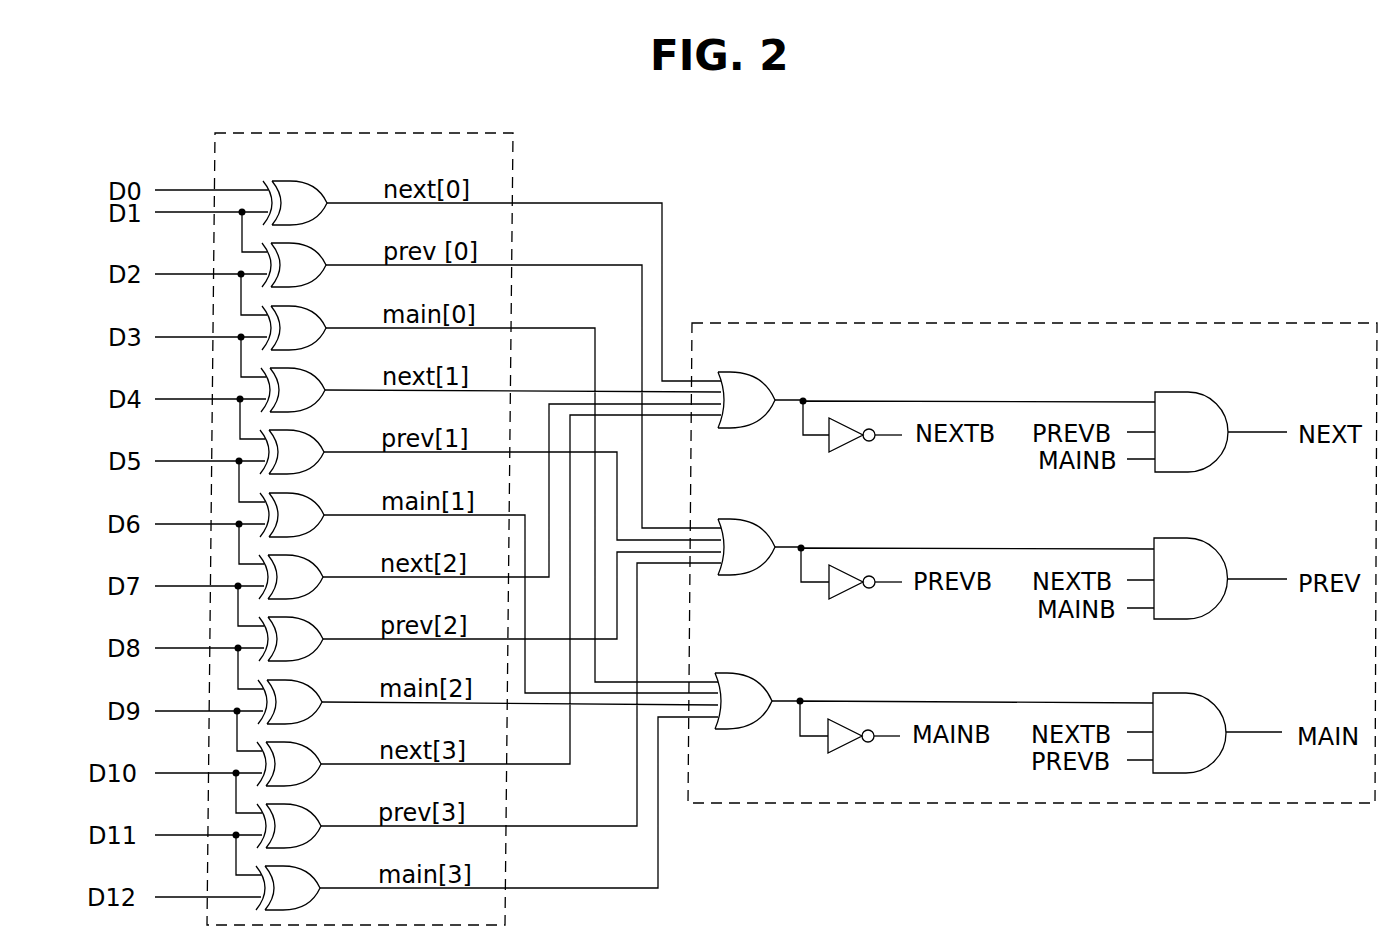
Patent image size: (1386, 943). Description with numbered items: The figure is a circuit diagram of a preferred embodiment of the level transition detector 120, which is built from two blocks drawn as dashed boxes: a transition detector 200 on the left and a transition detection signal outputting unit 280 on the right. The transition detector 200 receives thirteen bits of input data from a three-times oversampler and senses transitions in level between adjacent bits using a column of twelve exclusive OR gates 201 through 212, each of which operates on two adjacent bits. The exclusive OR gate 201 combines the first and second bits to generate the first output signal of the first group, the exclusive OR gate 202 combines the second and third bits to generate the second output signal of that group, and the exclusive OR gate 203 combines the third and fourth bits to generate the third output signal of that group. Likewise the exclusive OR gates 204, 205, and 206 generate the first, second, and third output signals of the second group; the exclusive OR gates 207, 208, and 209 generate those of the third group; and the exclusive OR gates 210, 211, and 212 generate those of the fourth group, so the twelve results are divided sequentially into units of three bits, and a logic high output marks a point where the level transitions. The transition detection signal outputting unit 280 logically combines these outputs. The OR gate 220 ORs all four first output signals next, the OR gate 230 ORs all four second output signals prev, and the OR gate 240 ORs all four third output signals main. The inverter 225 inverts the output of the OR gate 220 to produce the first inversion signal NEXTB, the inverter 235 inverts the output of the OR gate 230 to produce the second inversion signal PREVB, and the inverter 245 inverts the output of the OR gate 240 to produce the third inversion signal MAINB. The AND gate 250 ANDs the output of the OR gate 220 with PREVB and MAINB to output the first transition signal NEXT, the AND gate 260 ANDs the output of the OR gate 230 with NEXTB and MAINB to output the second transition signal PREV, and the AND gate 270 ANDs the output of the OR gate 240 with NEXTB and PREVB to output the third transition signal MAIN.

The level transition detector 120 is at (1148, 200).
The transition detector 200 is at (513, 163).
The exclusive OR gate 201 is at (307, 181).
The exclusive OR gate 202 is at (309, 246).
The exclusive OR gate 203 is at (309, 309).
The exclusive OR gate 204 is at (308, 371).
The exclusive OR gate 205 is at (307, 433).
The exclusive OR gate 206 is at (307, 496).
The exclusive OR gate 207 is at (306, 558).
The exclusive OR gate 208 is at (306, 620).
The exclusive OR gate 209 is at (305, 683).
The exclusive OR gate 210 is at (304, 745).
The exclusive OR gate 211 is at (304, 807).
The exclusive OR gate 212 is at (303, 869).
The OR gate 220 is at (757, 374).
The inverter 225 is at (851, 441).
The OR gate 230 is at (756, 519).
The inverter 235 is at (850, 589).
The OR gate 240 is at (765, 674).
The inverter 245 is at (849, 742).
The AND gate 250 is at (1221, 404).
The AND gate 260 is at (1220, 551).
The AND gate 270 is at (1220, 704).
The transition detection signal outputting unit 280 is at (1063, 322).